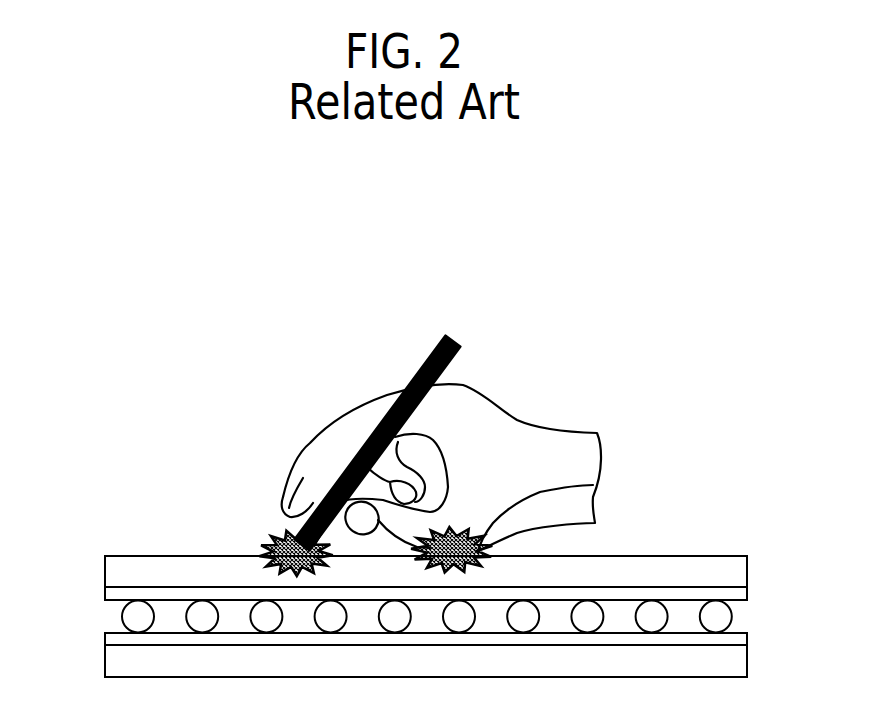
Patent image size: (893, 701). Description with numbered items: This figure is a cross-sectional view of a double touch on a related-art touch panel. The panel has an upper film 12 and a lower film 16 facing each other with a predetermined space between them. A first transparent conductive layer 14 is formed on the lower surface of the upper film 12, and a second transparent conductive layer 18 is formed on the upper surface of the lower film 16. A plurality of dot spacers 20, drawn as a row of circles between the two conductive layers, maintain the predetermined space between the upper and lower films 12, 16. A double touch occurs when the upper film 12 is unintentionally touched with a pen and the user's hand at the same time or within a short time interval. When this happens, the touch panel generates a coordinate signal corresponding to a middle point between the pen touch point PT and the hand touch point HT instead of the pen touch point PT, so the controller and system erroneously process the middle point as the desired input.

The upper film 12 is at (747, 562).
The first transparent conductive layer 14 is at (747, 592).
The lower film 16 is at (747, 668).
The second transparent conductive layer 18 is at (747, 638).
The dot spacers 20 is at (127, 617).
The pen touch point PT is at (275, 543).
The hand touch point HT is at (595, 486).